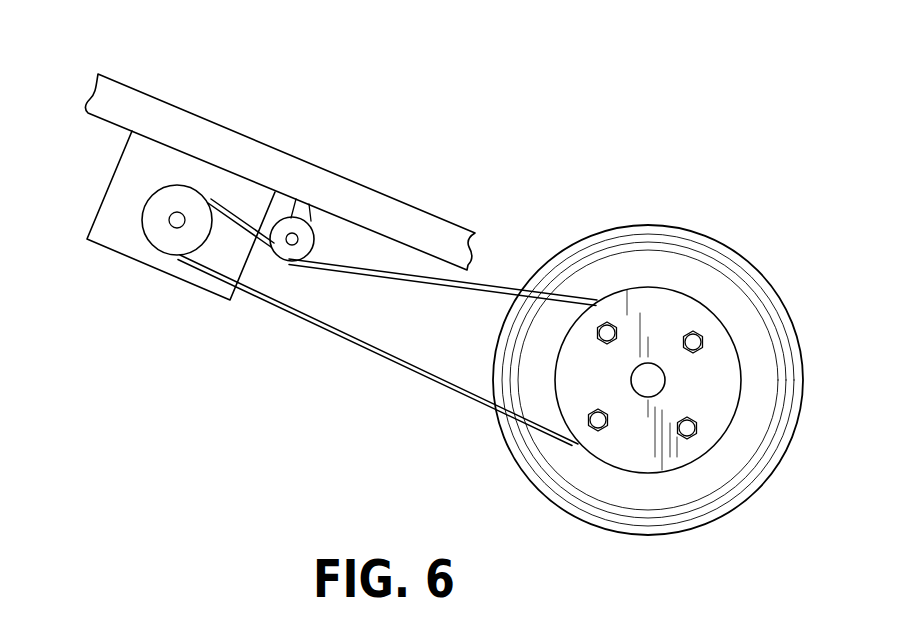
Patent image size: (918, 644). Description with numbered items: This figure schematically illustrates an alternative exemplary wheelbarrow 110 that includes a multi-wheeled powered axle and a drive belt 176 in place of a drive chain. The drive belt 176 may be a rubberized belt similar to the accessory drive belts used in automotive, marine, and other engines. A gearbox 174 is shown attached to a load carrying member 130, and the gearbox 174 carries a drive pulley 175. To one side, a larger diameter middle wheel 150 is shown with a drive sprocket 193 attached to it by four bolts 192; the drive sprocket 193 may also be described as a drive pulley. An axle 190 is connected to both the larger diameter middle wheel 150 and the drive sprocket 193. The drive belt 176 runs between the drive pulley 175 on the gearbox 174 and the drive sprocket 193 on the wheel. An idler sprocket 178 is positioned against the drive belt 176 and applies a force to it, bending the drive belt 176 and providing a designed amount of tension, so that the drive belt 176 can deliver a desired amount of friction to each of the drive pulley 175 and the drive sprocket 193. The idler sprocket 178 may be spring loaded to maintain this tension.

The wheelbarrow 110 is at (604, 162).
The load carrying member 130 is at (225, 145).
The larger diameter middle wheel 150 is at (660, 260).
The gearbox 174 is at (118, 232).
The drive pulley 175 is at (173, 185).
The drive belt 176 is at (397, 358).
The idler sprocket 178 is at (315, 240).
The axle 190 is at (653, 363).
The bolts 192 is at (598, 422).
The drive sprocket 193 is at (717, 390).